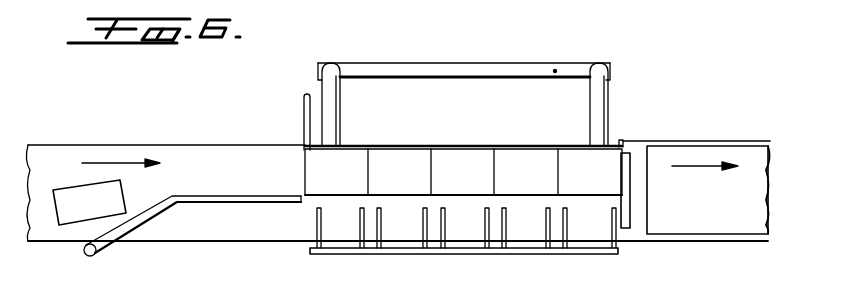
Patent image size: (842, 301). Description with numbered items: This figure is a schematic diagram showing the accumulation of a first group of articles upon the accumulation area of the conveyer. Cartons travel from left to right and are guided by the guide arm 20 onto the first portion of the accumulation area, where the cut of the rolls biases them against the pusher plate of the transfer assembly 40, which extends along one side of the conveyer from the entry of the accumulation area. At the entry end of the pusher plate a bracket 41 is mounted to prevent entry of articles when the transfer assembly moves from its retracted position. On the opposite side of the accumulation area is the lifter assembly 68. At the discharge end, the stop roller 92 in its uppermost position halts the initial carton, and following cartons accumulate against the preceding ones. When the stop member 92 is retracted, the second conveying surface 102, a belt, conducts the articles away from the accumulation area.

The guide arm 20 is at (233, 198).
The transfer assembly 40 is at (497, 51).
The bracket 41 is at (303, 107).
The lifter assembly 68 is at (408, 259).
The stop roller 92 is at (631, 222).
The second conveying surface 102 is at (728, 206).